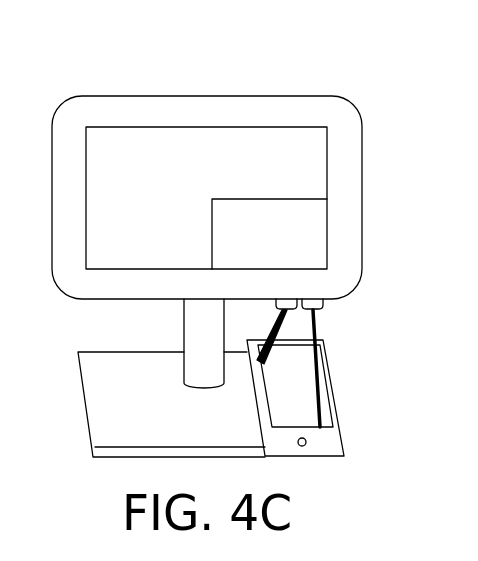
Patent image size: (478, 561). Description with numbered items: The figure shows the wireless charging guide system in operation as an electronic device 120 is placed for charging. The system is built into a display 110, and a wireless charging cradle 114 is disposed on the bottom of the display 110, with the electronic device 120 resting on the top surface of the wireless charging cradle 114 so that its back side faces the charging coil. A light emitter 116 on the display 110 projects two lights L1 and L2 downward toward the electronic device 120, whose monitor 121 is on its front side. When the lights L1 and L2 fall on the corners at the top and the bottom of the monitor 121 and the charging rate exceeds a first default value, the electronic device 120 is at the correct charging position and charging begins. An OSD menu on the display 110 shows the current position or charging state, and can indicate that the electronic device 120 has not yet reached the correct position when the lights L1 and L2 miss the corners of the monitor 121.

The display 110 is at (207, 95).
The on screen display menu OSD is at (303, 222).
The light emitter 116 is at (287, 299).
The wireless charging cradle 114 is at (107, 403).
The electronic device 120 is at (340, 418).
The monitor 121 is at (300, 370).
The light L1 is at (272, 334).
The light L2 is at (325, 383).